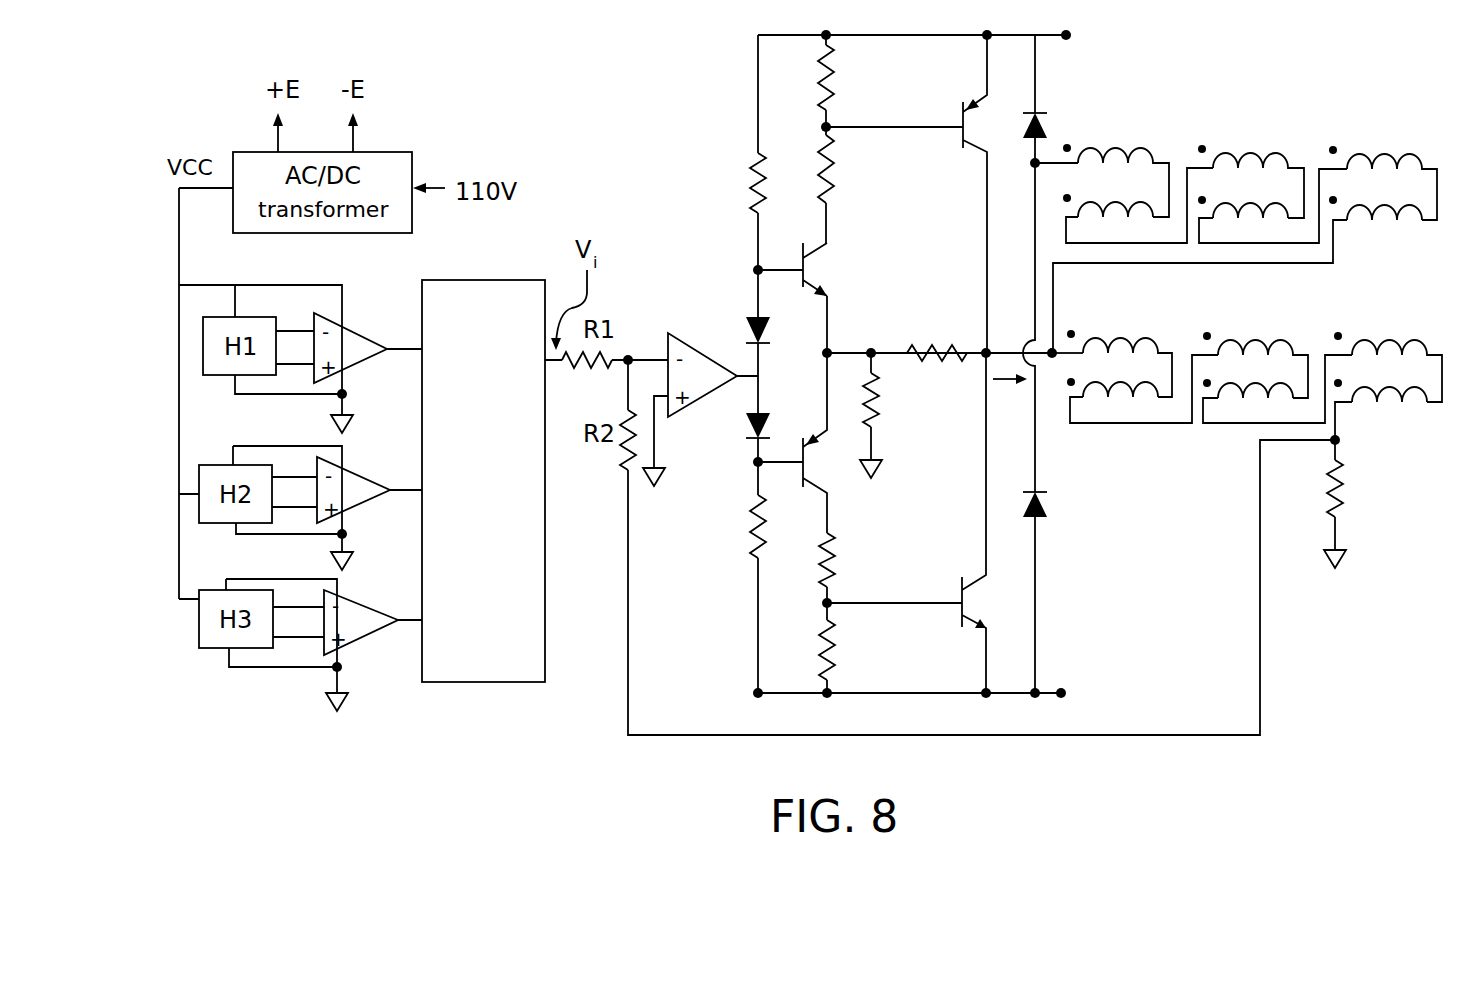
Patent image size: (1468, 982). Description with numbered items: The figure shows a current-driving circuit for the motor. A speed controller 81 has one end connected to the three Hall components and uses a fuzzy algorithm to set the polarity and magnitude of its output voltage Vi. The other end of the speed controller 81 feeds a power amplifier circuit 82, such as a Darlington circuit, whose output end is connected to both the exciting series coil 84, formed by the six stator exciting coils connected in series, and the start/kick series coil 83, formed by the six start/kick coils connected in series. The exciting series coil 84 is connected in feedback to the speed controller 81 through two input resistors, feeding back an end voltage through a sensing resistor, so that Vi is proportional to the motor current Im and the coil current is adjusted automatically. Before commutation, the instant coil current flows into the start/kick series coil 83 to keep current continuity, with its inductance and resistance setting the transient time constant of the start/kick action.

The speed controller 81 is at (495, 280).
The power amplifier circuit 82 is at (717, 58).
The start/kick series coil 83 is at (1293, 96).
The exciting series coil 84 is at (1310, 311).